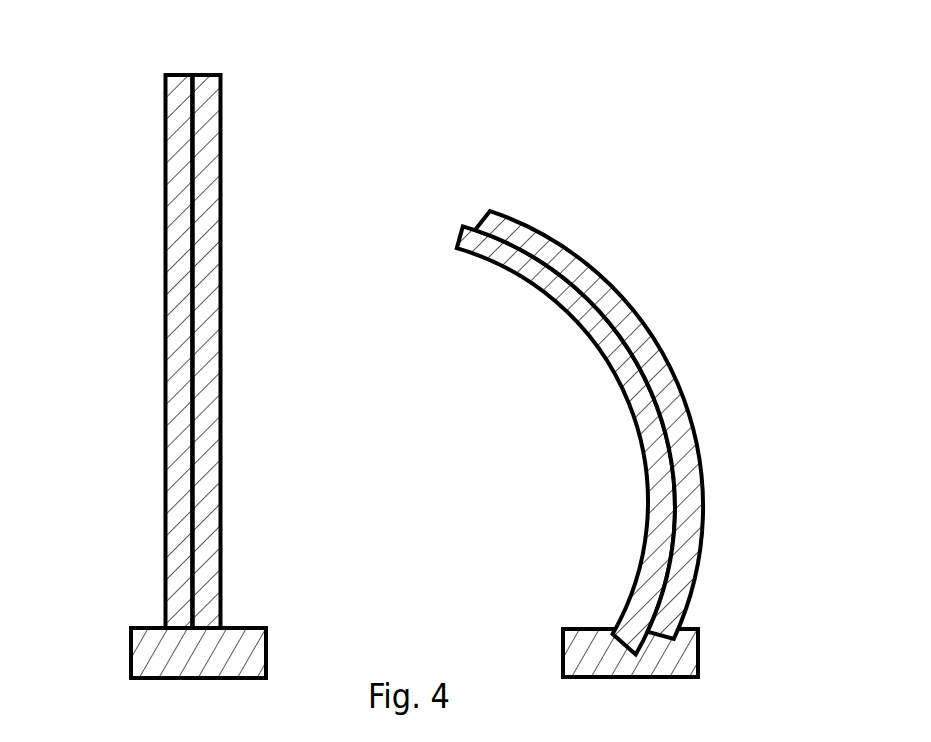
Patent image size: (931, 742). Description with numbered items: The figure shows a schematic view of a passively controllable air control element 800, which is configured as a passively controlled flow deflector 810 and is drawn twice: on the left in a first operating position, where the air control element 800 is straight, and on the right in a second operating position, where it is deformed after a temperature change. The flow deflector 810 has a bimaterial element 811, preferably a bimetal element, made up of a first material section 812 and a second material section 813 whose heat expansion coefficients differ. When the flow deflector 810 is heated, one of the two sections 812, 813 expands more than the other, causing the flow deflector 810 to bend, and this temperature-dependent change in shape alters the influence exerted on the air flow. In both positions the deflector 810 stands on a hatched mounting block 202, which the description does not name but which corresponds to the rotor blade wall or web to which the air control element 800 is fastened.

The passively controllable air control element 800 is at (388, 58).
The passively controlled flow deflector 810 is at (409, 365).
The bimaterial element 811 is at (230, 330).
The first material section 812 is at (163, 183).
The second material section 813 is at (226, 212).
The base / substrate 202 is at (248, 628).